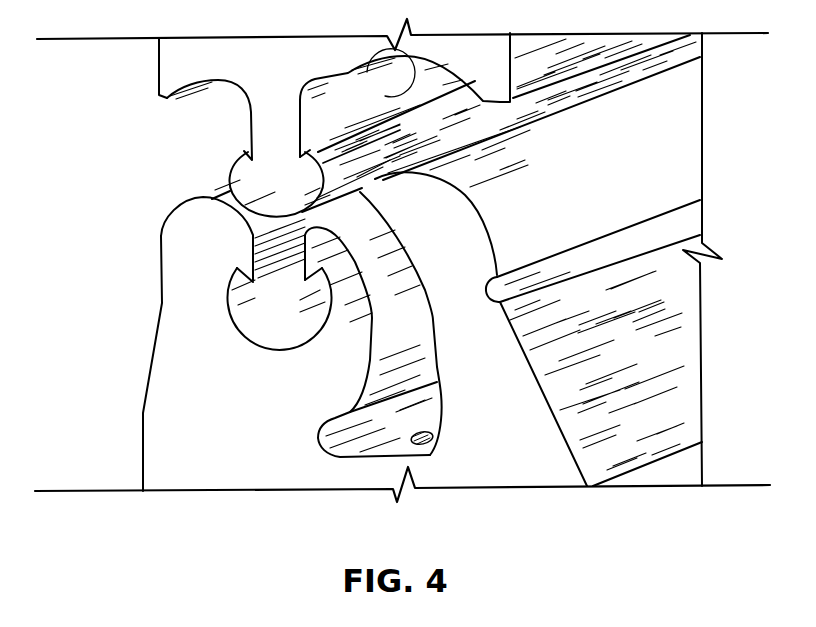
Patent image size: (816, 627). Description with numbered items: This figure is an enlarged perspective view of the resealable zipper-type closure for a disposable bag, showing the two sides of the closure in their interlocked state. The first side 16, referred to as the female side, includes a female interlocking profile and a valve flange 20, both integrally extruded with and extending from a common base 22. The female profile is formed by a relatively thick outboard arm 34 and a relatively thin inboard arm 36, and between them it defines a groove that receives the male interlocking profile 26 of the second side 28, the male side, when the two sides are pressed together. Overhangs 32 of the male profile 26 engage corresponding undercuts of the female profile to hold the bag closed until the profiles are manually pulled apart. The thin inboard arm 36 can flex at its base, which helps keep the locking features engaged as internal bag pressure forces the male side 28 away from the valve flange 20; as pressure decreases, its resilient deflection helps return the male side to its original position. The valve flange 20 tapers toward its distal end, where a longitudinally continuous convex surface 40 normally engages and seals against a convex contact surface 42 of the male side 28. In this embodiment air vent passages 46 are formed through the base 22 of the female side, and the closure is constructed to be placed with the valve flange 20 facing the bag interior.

The first side 16 is at (130, 329).
The valve flange 20 is at (428, 307).
The base 22 is at (275, 488).
The male interlocking profile 26 is at (248, 123).
The second side 28 is at (166, 112).
The overhangs 32 is at (244, 148).
The outboard arm 34 is at (159, 262).
The inboard arm 36 is at (311, 294).
The convex surface 40 is at (461, 148).
The contact surface 42 is at (402, 84).
The air vent passages 46 is at (428, 430).